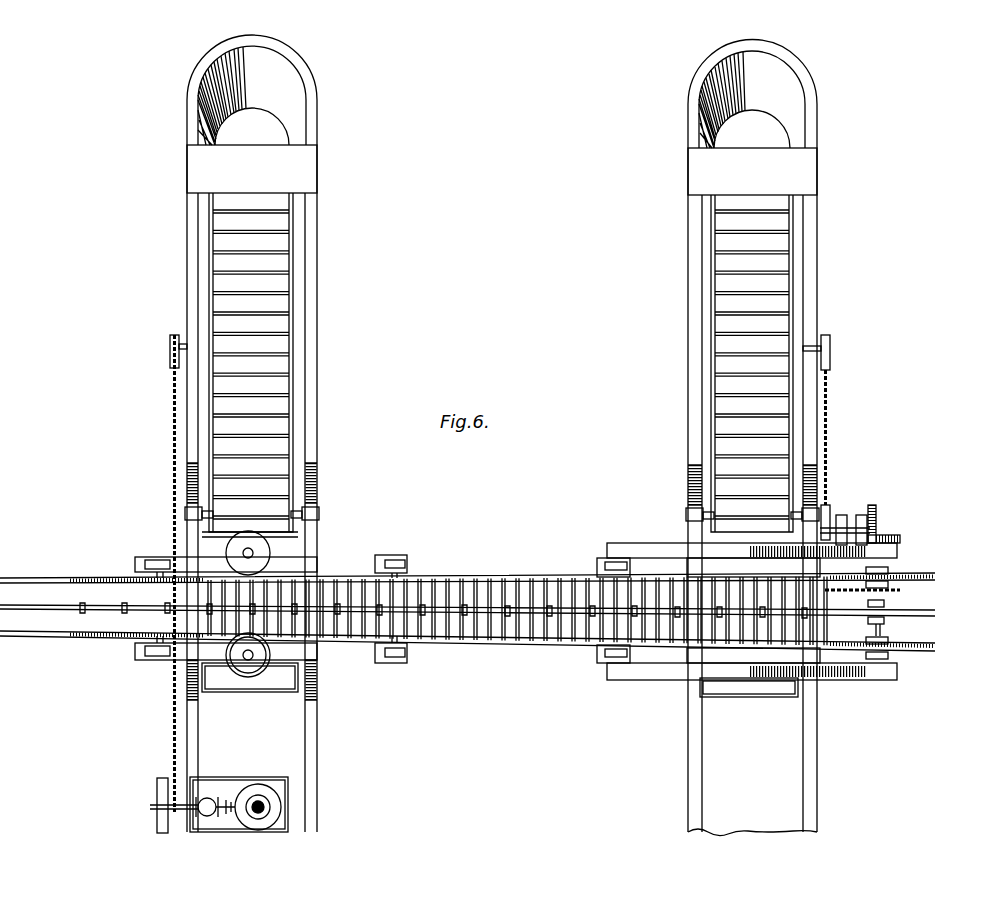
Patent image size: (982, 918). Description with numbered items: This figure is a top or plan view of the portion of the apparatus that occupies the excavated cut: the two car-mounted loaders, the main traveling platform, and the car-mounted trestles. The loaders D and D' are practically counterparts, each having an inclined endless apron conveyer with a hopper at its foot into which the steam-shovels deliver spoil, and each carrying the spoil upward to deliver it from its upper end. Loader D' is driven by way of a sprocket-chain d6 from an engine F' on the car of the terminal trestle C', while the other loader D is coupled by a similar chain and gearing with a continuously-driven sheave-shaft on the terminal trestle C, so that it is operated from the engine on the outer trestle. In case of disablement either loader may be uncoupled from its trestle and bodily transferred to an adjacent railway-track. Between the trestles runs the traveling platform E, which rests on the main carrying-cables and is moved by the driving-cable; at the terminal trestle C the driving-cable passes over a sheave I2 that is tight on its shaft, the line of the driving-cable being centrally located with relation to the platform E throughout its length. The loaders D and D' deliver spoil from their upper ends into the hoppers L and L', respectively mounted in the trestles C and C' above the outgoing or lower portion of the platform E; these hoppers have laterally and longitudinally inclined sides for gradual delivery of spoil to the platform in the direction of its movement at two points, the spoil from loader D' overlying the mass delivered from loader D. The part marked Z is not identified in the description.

The car-mounted loader D' is at (264, 433).
The car-mounted loader D is at (763, 438).
The sprocket-chain d6 is at (172, 450).
The terminal trestle C' is at (271, 596).
The terminal trestle C is at (747, 597).
The traveling platform E is at (481, 572).
The hopper L is at (749, 688).
The engine F' is at (219, 796).
The sheave I2 is at (892, 607).
The key Z is at (876, 634).